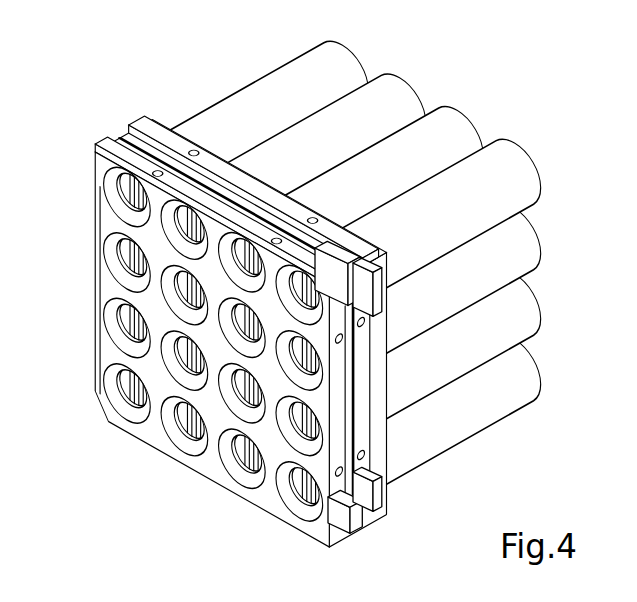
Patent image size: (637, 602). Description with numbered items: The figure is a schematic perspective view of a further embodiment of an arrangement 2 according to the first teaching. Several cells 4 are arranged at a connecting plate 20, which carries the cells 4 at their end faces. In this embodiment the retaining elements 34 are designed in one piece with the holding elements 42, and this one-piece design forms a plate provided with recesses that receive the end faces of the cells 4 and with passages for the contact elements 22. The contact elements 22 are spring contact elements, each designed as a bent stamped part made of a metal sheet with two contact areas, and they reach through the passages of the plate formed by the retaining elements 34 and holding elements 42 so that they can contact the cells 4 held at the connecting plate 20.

The arrangement 2 is at (126, 79).
The cells 4 is at (516, 168).
The connecting plate 20 is at (355, 505).
The contact elements 22 is at (247, 455).
The retaining elements 34 is at (120, 252).
The holding elements 42 is at (209, 337).